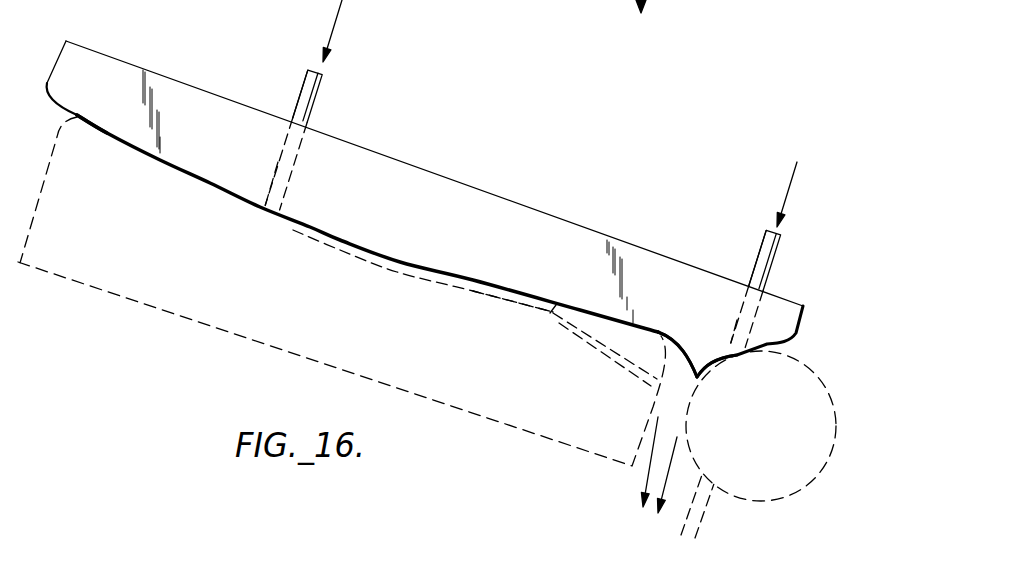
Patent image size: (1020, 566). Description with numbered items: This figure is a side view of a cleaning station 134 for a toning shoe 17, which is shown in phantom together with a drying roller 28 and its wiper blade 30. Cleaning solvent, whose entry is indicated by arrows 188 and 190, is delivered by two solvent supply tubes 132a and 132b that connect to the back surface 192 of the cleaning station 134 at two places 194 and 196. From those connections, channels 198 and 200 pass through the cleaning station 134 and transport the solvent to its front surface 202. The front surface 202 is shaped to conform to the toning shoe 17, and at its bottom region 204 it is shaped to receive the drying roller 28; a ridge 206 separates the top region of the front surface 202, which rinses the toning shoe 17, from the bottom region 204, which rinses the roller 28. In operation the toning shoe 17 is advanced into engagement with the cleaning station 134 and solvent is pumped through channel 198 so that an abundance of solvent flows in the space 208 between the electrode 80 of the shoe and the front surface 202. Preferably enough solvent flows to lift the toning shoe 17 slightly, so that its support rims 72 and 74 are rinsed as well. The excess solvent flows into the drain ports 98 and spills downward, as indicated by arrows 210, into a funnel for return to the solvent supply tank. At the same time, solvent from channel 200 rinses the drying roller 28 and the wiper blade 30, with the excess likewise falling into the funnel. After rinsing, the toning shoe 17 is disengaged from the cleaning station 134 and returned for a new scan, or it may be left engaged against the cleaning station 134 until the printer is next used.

The toning shoe 17 is at (182, 325).
The drying roller 28 is at (832, 397).
The wiper blade 30 is at (707, 500).
The support rim 72 is at (104, 132).
The support rim 74 is at (603, 323).
The electrode 80 is at (398, 272).
The drain ports 98 is at (593, 343).
The solvent supply tube 132a is at (322, 79).
The solvent supply tube 132b is at (780, 247).
The cleaning station 134 is at (501, 206).
The arrow 188 is at (340, 14).
The arrow 190 is at (797, 166).
The back surface 192 is at (414, 165).
The connection place 194 is at (293, 110).
The connection place 196 is at (753, 273).
The channel 198 is at (278, 162).
The channel 200 is at (737, 320).
The front surface 202 is at (392, 253).
The bottom region 204 is at (723, 350).
The ridge 206 is at (703, 358).
The space 208 is at (478, 294).
The arrows 210 is at (669, 465).